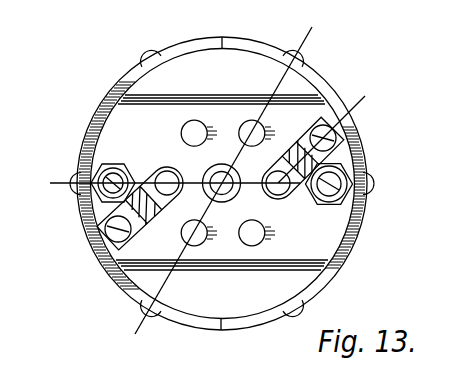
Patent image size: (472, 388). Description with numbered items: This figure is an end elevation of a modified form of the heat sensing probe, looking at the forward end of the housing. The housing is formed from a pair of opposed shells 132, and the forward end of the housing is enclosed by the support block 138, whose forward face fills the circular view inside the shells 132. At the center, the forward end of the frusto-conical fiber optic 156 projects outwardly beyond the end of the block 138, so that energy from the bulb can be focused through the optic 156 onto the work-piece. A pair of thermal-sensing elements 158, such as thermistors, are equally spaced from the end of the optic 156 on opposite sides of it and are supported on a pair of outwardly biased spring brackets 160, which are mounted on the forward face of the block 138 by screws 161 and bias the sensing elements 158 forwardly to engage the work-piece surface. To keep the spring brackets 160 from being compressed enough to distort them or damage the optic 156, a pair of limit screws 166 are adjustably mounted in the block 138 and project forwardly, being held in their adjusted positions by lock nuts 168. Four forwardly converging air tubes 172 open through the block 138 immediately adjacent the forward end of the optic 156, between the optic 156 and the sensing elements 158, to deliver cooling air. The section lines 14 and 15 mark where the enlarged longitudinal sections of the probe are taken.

The opposed shells 132 is at (110, 76).
The support block 138 is at (316, 252).
The frusto-conical fiber optic 156 is at (206, 174).
The thermal-sensing elements 158 is at (160, 174).
The spring brackets 160 is at (298, 147).
The screws 161 is at (336, 142).
The limit screws 166 is at (94, 204).
The lock nuts 168 is at (101, 167).
The air tubes 172 is at (240, 127).
The section line 14— 14 is at (50, 186).
The section line 15— 15 is at (333, 42).